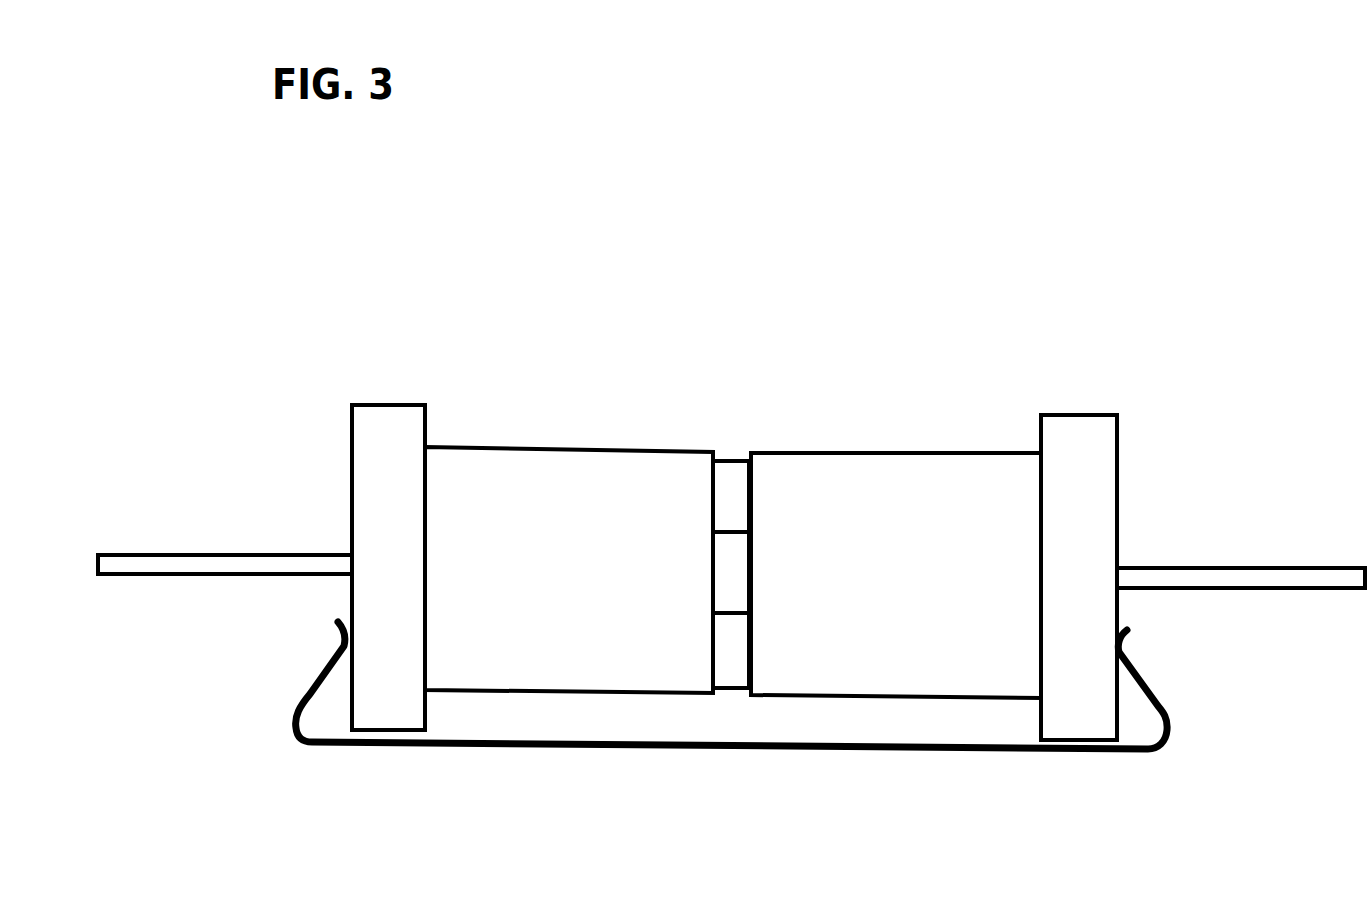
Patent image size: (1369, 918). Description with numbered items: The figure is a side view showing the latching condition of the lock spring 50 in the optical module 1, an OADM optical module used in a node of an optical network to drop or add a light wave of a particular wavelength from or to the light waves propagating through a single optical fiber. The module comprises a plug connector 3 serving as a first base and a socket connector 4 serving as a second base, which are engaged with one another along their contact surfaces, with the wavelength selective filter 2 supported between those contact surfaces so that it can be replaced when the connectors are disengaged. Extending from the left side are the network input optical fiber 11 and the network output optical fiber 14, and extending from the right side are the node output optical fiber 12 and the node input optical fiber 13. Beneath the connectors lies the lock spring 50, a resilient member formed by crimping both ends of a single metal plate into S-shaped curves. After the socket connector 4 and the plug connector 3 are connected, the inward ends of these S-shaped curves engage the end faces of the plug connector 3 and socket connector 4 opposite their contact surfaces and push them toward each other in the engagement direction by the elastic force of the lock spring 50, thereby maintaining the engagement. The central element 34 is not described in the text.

The optical module 1 is at (786, 320).
The wavelength selective filter 2 is at (730, 462).
The plug connector 3 is at (584, 456).
The socket connector 4 is at (862, 460).
The partition portions of intermediate element 34 is at (737, 580).
The network input optical fiber 11 is at (254, 555).
The network output optical fiber 14 is at (388, 567).
The node output optical fiber 12 is at (1220, 568).
The node input optical fiber 13 is at (1079, 577).
The lock spring 50 is at (565, 748).